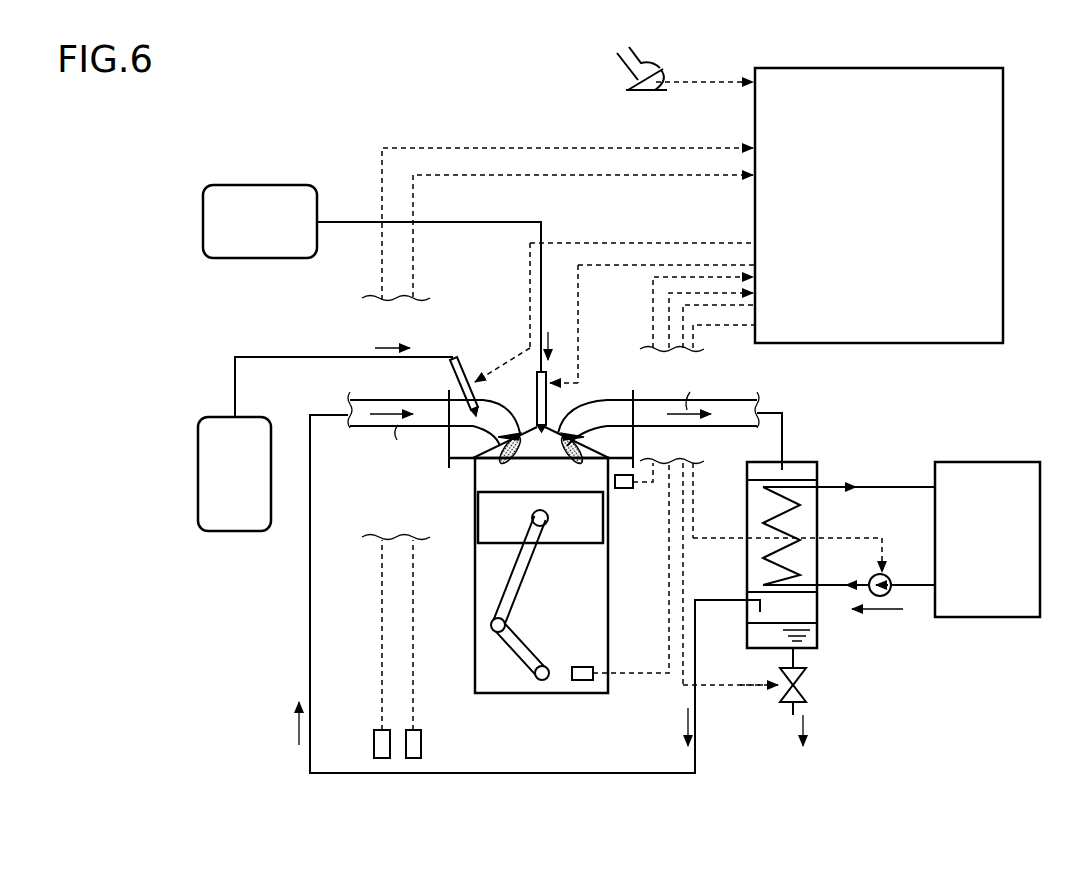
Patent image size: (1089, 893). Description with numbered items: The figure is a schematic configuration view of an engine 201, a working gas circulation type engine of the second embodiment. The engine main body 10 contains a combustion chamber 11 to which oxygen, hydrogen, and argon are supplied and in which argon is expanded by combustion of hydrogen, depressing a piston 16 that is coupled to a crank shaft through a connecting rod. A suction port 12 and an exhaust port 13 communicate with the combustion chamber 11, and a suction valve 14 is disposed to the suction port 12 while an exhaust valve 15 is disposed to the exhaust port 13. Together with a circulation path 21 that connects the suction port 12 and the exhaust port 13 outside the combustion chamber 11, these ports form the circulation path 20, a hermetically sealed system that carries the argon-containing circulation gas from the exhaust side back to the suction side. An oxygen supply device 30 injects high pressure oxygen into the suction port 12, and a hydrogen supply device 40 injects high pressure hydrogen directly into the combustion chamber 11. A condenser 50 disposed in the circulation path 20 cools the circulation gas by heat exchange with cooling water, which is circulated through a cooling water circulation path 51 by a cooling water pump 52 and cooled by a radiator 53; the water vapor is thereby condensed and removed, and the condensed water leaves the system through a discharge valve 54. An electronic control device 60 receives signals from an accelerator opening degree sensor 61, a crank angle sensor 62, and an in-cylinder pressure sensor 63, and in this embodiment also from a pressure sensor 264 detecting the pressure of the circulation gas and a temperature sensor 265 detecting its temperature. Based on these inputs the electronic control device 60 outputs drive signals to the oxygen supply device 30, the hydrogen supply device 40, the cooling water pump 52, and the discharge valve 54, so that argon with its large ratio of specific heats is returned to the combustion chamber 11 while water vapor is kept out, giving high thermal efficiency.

The engine 201 is at (413, 84).
The hydrogen supply device 40 is at (278, 168).
The oxygen supply device 30 is at (264, 347).
The engine main body 10 is at (501, 699).
The combustion chamber 11 is at (493, 483).
The suction port 12 is at (477, 423).
The exhaust port 13 is at (607, 409).
The suction valve 14 is at (490, 432).
The exhaust valve 15 is at (592, 402).
The piston 16 is at (603, 528).
The circulation path 20 is at (565, 414).
The circulation path 21 is at (571, 780).
The condenser 50 is at (805, 460).
The cooling water circulation path 51 is at (905, 486).
The cooling water pump 52 is at (888, 575).
The radiator 53 is at (985, 462).
The discharge valve 54 is at (806, 685).
The electronic control device 60 is at (1003, 90).
The accelerator opening degree sensor 61 is at (628, 92).
The crank angle sensor 62 is at (586, 682).
The in-cylinder pressure sensor 63 is at (627, 490).
The pressure sensor 264 is at (421, 735).
The temperature sensor 265 is at (374, 735).